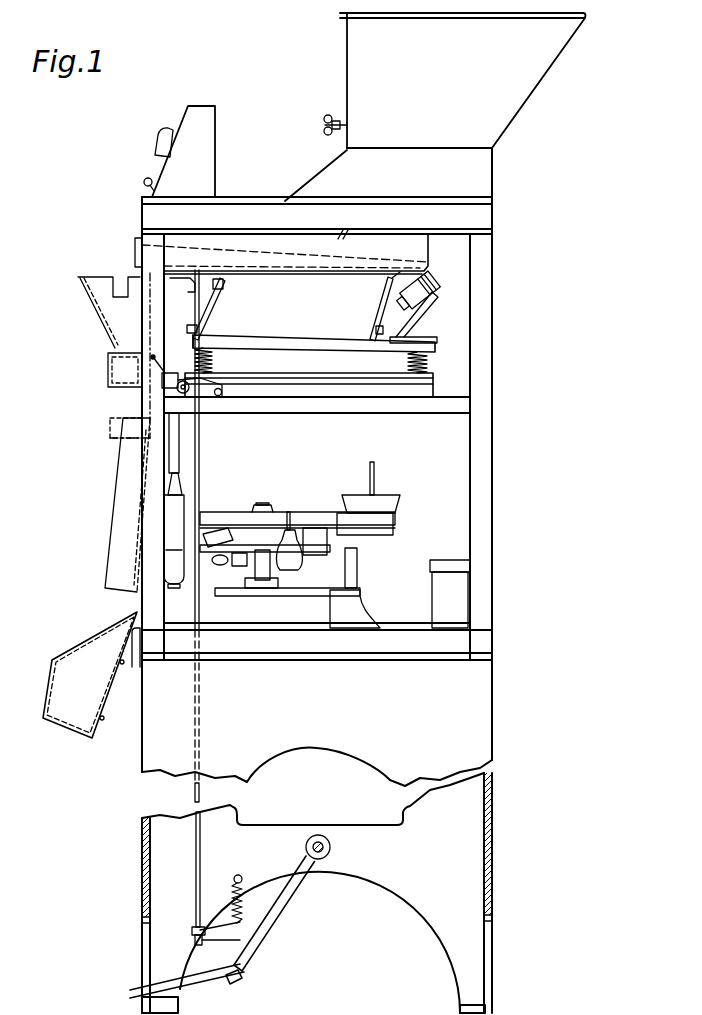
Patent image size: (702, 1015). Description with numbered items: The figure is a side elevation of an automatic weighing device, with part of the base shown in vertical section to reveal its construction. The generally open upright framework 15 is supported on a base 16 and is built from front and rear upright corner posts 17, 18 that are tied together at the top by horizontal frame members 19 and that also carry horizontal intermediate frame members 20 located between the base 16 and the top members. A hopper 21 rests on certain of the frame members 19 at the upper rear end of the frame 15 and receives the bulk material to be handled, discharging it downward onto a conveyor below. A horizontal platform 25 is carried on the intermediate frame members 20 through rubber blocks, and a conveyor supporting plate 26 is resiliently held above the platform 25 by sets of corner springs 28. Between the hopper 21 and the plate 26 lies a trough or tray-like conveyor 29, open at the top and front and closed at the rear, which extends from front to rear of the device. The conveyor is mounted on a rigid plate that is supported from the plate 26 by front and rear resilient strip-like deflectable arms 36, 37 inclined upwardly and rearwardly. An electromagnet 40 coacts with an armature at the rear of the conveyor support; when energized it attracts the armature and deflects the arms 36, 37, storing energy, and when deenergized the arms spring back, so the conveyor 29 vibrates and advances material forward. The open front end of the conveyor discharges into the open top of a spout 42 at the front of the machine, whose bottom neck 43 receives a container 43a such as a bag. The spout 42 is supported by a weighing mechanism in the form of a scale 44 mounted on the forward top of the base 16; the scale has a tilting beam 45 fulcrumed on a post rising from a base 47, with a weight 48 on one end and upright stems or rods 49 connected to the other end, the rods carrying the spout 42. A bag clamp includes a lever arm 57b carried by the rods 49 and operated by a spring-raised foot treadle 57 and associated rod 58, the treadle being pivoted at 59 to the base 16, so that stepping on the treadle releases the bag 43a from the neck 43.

The upright framework 15 is at (498, 470).
The base 16 is at (496, 802).
The front upright corner posts 17 is at (143, 598).
The rear upright corner posts 18 is at (488, 420).
The horizontal frame members 19 is at (482, 222).
The horizontal intermediate frame members 20 is at (317, 415).
The hopper 21 is at (536, 90).
The horizontal platform 25 is at (305, 378).
The conveyor supporting plate 26 is at (278, 346).
The corner springs 28 is at (428, 363).
The trough-like conveyor 29 is at (131, 252).
The front resilient deflectable arm 36 is at (207, 306).
The rear resilient deflectable arm 37 is at (388, 309).
The electromagnet 40 is at (425, 291).
The spout 42 is at (97, 318).
The neck 43 is at (123, 368).
The container 43a is at (112, 410).
The scale 44 is at (325, 466).
The tilting beam 45 is at (340, 517).
The base 47 is at (287, 604).
The weight 48 is at (398, 505).
The upright stems or rods 49 is at (178, 446).
The foot treadle 57 is at (272, 915).
The lever arm 57b is at (160, 370).
The rod 58 is at (200, 847).
The pivot 59 is at (331, 847).